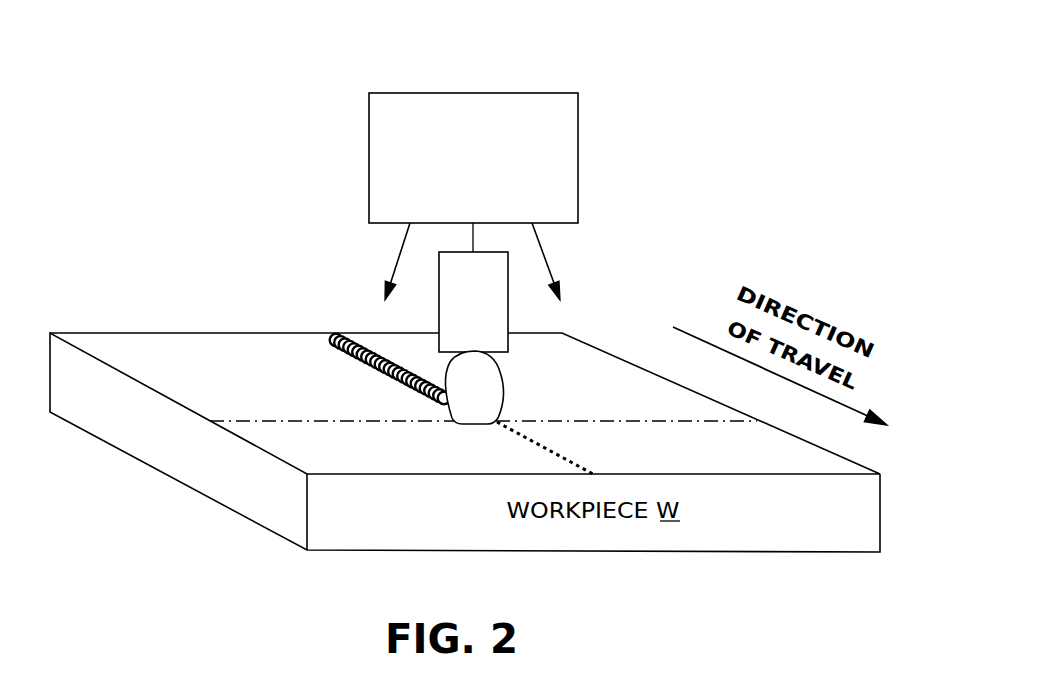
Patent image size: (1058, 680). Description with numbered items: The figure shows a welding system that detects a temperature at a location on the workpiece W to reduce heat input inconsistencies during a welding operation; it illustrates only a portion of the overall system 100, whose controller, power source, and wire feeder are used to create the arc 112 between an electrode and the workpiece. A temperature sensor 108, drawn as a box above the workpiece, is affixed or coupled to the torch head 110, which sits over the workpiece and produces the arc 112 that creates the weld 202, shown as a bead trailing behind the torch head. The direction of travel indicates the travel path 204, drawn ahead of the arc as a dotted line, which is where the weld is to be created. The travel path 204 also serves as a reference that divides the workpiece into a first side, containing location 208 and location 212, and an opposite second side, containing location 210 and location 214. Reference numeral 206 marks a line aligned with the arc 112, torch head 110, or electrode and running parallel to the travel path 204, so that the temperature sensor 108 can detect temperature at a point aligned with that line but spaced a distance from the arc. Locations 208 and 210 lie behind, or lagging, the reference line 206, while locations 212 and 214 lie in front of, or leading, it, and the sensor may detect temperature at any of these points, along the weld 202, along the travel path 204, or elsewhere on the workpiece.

The system 100 is at (750, 40).
The temperature sensor 108 is at (545, 93).
The torch head 110 is at (455, 312).
The arc 112 is at (457, 396).
The weld 202 is at (337, 336).
The travel path 204 is at (548, 452).
The reference line aligned with arc/torch head/electrode 206 is at (252, 420).
The location 208 is at (296, 404).
The location 210 is at (586, 396).
The location 212 is at (389, 457).
The location 214 is at (699, 461).